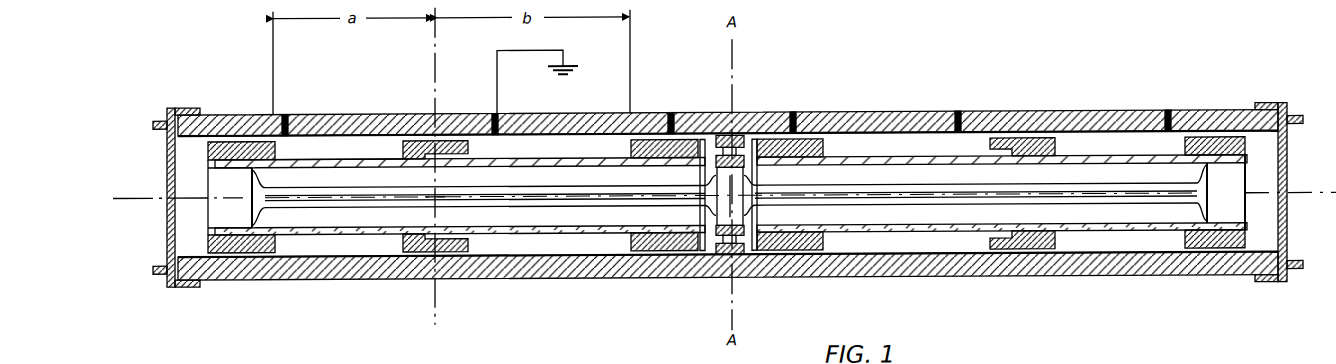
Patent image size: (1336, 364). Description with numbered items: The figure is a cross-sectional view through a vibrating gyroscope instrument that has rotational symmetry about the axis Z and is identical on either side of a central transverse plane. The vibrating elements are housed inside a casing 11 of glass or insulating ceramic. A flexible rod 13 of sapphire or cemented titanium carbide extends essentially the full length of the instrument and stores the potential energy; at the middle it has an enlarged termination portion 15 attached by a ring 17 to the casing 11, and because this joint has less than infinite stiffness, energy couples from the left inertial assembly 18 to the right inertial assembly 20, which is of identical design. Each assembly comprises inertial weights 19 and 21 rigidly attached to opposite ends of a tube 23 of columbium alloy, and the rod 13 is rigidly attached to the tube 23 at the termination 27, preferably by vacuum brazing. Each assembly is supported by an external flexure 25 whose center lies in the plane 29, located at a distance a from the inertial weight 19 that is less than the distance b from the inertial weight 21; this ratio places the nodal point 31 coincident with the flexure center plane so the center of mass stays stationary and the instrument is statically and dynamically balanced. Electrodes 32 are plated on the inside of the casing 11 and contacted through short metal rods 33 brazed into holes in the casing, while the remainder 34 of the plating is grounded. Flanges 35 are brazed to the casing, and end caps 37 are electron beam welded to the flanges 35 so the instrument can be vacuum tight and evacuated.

The casing 11 is at (542, 283).
The flexible rod 13 is at (533, 194).
The enlarged termination portion 15 is at (738, 218).
The ring 17 is at (733, 132).
The left inertial assembly 18 is at (393, 152).
The inertial weight 19 is at (258, 263).
The right inertial assembly 20 is at (893, 158).
The inertial weight 21 is at (675, 258).
The tube 23 is at (300, 163).
The external flexure 25 is at (427, 252).
The termination 27 is at (218, 208).
The plane 29 is at (437, 83).
The nodal point 31 is at (435, 198).
The electrodes 32 is at (240, 130).
The short metal rods 33 is at (295, 117).
The remainder of the plating 34 is at (372, 148).
The flanges 35 is at (178, 110).
The end caps 37 is at (167, 157).
The axis Z is at (167, 197).